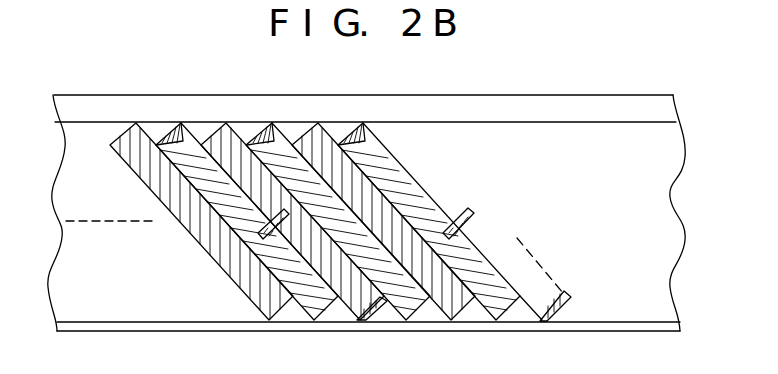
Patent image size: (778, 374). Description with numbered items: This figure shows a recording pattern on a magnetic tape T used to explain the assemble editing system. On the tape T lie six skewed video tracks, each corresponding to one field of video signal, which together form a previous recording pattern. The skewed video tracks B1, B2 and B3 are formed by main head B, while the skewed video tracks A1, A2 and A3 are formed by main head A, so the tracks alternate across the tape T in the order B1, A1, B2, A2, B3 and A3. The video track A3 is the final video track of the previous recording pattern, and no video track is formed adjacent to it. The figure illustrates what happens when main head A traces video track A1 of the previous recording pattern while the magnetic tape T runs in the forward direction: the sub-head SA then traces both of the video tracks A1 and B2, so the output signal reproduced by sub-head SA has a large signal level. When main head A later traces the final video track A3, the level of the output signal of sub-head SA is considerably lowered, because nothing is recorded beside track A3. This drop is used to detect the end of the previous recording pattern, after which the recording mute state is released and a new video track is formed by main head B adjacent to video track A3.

The magnetic tape T is at (578, 128).
The skewed video track B1 is at (122, 130).
The main head A is at (168, 135).
The skewed video track A1 is at (188, 138).
The skewed video track B2 is at (220, 135).
The skewed video track A2 is at (262, 138).
The skewed video track B3 is at (310, 142).
The skewed video track A3 is at (370, 142).
The sub-head SA is at (258, 235).
The main head B is at (368, 321).